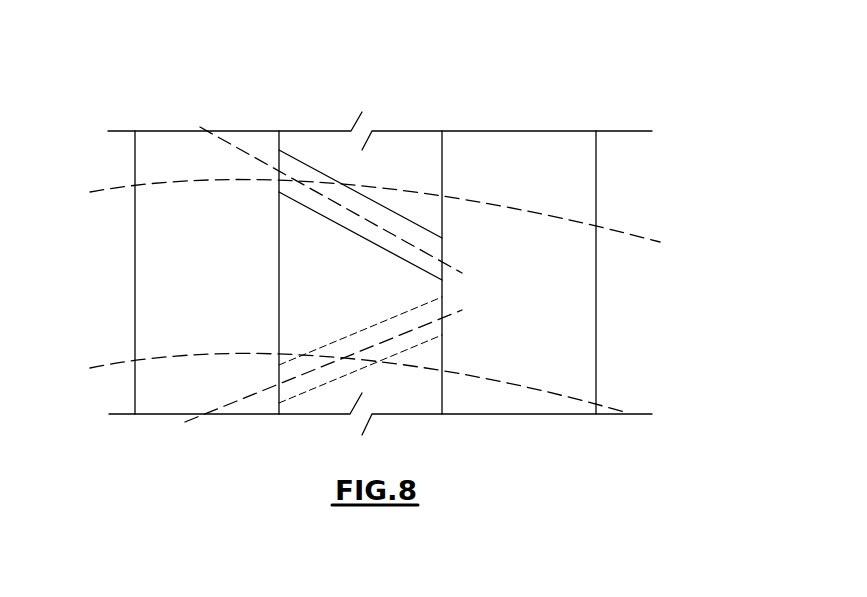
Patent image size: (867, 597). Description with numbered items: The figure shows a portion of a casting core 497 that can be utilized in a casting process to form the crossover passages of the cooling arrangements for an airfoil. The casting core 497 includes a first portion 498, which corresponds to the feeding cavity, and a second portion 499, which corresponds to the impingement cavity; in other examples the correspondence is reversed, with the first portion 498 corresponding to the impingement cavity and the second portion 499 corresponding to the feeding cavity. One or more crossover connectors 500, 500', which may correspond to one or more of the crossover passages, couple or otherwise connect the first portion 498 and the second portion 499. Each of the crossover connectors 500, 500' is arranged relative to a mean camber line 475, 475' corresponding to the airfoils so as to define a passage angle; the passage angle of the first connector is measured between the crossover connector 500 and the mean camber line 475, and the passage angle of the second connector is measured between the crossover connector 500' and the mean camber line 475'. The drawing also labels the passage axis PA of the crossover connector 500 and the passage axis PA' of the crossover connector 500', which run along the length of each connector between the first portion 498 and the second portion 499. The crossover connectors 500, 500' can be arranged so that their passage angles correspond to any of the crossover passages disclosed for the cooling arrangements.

The casting core 497 is at (136, 63).
The first portion 498 is at (518, 165).
The second portion 499 is at (165, 147).
The crossover connector 500 is at (360, 211).
The crossover connector 500' is at (360, 344).
The passage axis PA is at (363, 204).
The alternate passage axis PA' is at (354, 362).
The mean camber line 475 is at (390, 210).
The mean camber line 475' is at (380, 374).